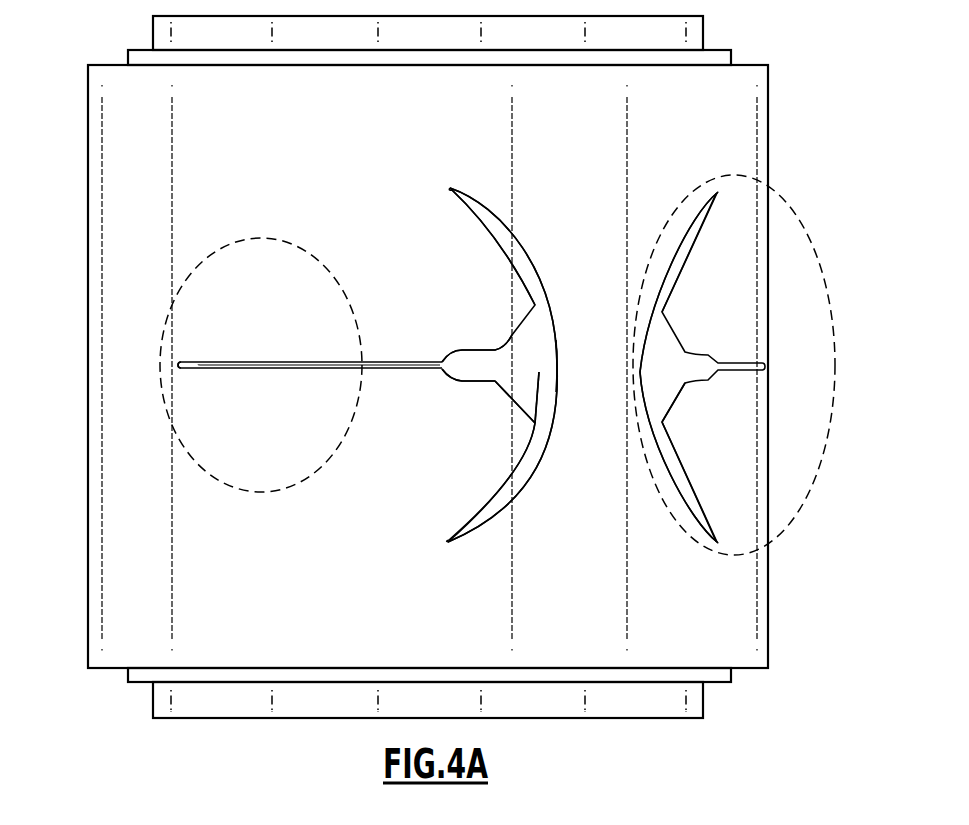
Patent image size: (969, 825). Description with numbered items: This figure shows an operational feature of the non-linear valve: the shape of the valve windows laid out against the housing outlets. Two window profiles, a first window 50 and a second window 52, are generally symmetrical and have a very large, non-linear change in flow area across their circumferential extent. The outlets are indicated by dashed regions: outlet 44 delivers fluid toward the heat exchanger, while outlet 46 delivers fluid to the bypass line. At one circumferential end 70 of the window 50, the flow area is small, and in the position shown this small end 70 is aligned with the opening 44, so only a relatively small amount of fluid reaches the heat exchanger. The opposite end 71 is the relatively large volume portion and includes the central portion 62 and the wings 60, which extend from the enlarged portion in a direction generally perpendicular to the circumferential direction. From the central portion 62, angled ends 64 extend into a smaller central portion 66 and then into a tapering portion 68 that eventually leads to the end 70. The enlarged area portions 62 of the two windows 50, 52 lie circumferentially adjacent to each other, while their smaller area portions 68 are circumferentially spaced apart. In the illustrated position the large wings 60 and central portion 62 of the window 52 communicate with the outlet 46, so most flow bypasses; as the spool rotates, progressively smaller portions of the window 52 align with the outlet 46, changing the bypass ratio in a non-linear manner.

The outlet 44 is at (163, 400).
The outlet 46 is at (805, 230).
The valve window 50 is at (527, 258).
The valve window 52 is at (640, 371).
The wings 60 is at (478, 220).
The central portion 62 is at (527, 413).
The angled ends 64 is at (512, 336).
The smaller central portion 66 is at (466, 381).
The tapering portion 68 is at (383, 362).
The circumferential end 70 is at (178, 365).
The end 71 is at (557, 340).